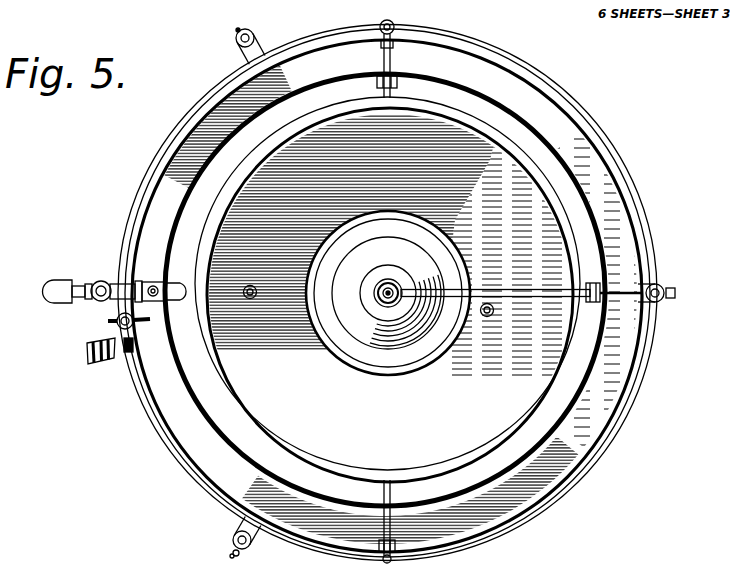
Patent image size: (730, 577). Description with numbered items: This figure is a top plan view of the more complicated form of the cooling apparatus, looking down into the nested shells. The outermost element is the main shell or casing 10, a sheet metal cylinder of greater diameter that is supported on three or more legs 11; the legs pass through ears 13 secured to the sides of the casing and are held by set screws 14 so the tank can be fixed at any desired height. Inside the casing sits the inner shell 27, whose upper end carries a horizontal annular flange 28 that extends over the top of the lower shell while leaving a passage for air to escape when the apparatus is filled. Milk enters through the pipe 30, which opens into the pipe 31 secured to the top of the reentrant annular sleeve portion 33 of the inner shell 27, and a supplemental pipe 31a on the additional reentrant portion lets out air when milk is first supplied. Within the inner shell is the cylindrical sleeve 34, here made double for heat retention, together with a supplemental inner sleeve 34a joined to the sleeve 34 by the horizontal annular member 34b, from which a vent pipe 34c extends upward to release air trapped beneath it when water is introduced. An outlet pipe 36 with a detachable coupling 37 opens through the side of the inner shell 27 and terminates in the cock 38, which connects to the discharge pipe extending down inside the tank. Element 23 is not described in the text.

The main shell or casing 10 is at (140, 181).
The legs 11 is at (254, 42).
The ears 13 is at (241, 46).
The set screws 14 is at (237, 29).
The handle shaft 23 is at (104, 362).
The inner shell 27 is at (238, 456).
The horizontal annular flange 28 is at (457, 522).
The milk inlet pipe 30 is at (388, 280).
The pipe 31 is at (386, 308).
The supplemental pipe 31a is at (252, 300).
The reentrant annular sleeve portion 33 is at (413, 328).
The cylindrical sleeve 34 is at (306, 460).
The supplemental inner sleeve 34a is at (362, 367).
The horizontal annular member 34b is at (368, 436).
The vent pipe 34c is at (492, 317).
The outlet pipe 36 is at (512, 290).
The detachable coupling 37 is at (587, 289).
The cock 38 is at (656, 288).